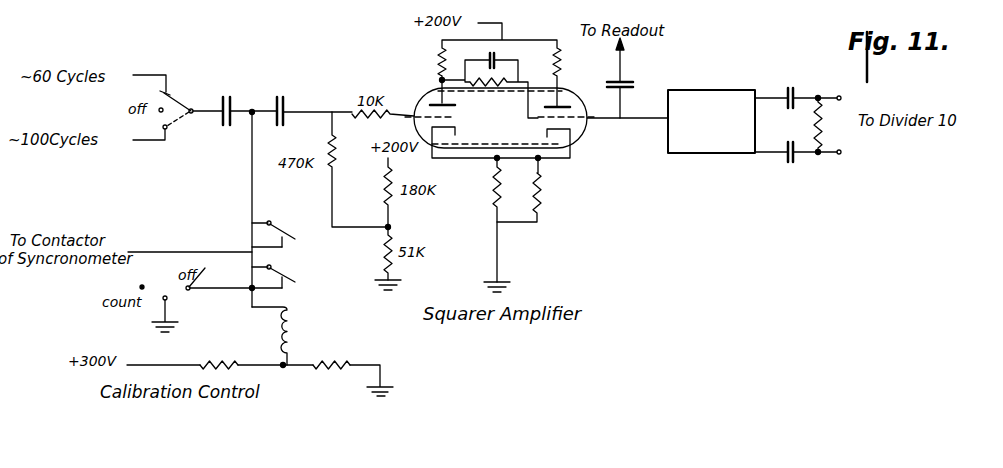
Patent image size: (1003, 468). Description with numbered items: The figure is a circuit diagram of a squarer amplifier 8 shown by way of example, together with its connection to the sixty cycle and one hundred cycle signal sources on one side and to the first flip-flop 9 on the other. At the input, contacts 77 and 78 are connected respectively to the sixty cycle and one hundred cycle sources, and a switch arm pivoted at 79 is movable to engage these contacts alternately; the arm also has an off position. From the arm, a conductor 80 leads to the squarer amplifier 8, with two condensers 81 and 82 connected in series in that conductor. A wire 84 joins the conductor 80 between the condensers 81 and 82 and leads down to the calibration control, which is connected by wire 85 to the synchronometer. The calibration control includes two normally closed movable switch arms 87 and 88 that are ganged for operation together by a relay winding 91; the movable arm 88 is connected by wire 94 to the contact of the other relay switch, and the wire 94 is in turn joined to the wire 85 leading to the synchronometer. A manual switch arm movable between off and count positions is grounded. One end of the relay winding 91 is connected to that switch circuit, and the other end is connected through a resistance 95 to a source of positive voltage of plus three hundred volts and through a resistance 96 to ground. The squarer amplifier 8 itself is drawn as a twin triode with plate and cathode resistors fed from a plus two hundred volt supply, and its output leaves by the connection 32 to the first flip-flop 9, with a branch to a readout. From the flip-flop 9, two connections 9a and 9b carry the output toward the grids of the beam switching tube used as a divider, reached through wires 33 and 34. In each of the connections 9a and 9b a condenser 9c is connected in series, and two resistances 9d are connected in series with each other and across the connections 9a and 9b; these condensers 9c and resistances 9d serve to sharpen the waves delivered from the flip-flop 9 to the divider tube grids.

The contact 77 is at (170, 94).
The switch pivot contact 79 is at (188, 104).
The contact 78 is at (168, 130).
The condenser 81 is at (228, 95).
The condenser 82 is at (279, 95).
The conductor 80 is at (302, 111).
The wire 84 is at (250, 174).
The wire 85 is at (173, 252).
The wire 94 is at (246, 246).
The movable switch arm 87 is at (272, 222).
The movable switch arm 88 is at (294, 278).
The relay winding 91 is at (289, 326).
The resistance 95 is at (220, 360).
The resistance 96 is at (333, 361).
The squarer amplifier 8 is at (548, 208).
The connection 32 is at (611, 120).
The first flip-flop 9 is at (713, 90).
The connection 9a is at (764, 97).
The connection 9b is at (766, 154).
The condenser 9c is at (794, 89).
The resistances 9d is at (814, 115).
The wire 33 is at (805, 98).
The wire 34 is at (803, 154).